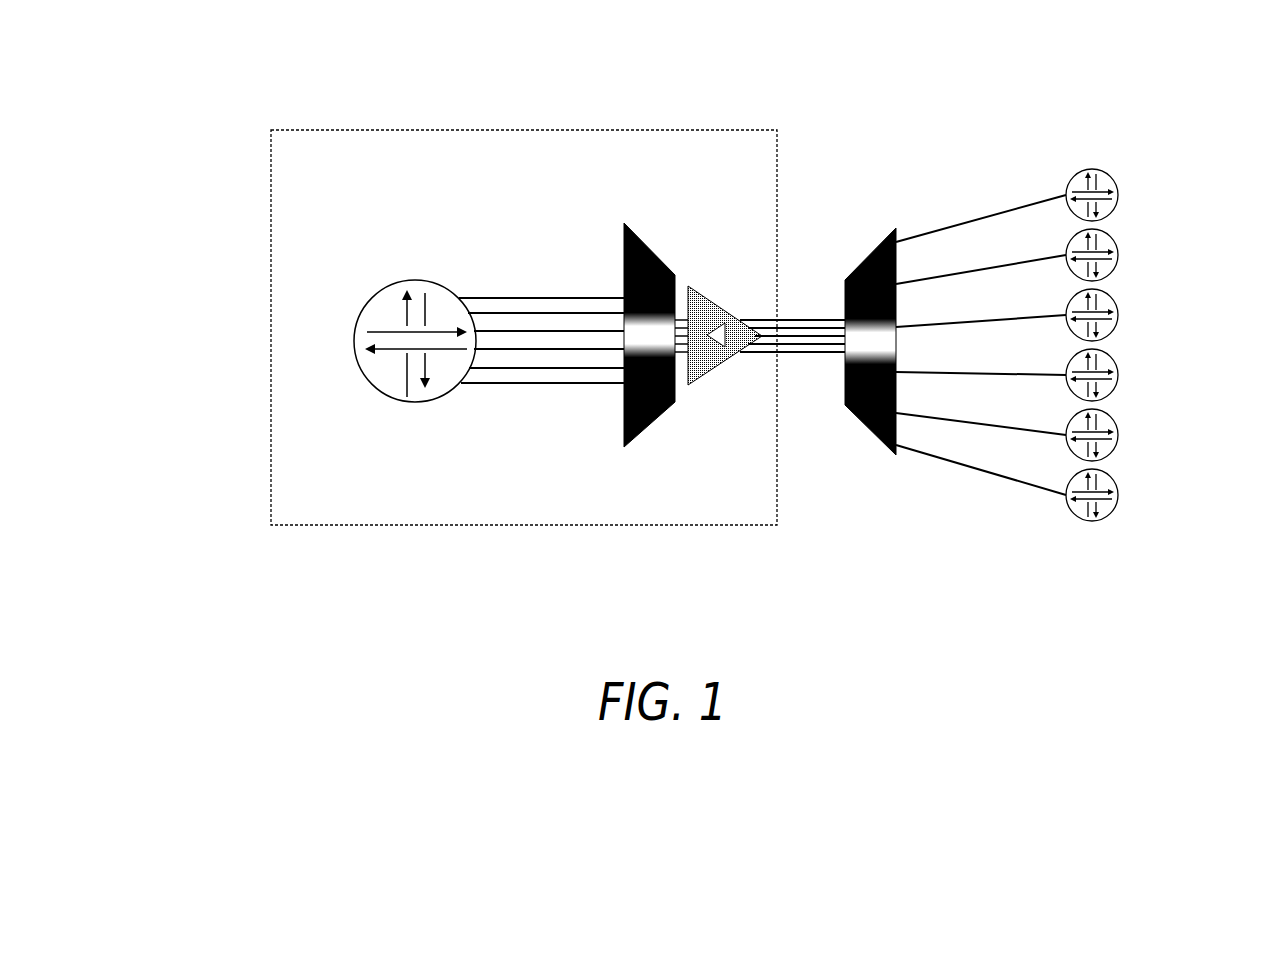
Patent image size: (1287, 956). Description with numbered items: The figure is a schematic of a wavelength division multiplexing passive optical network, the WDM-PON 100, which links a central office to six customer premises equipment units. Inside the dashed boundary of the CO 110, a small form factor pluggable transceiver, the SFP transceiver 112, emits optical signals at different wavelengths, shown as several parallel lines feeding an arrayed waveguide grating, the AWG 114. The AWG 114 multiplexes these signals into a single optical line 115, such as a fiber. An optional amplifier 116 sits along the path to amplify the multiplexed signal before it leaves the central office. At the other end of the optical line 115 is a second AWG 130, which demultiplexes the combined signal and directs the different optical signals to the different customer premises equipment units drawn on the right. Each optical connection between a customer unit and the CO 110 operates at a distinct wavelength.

The WDM-PON 100 is at (357, 83).
The CO 110 is at (357, 525).
The small form factor pluggable (SFP) transceiver 112 is at (375, 303).
The arrayed waveguide grating (AWG) 114 is at (625, 260).
The optical line 115 is at (792, 316).
The amplifier 116 is at (717, 307).
The second AWG 130 is at (868, 422).